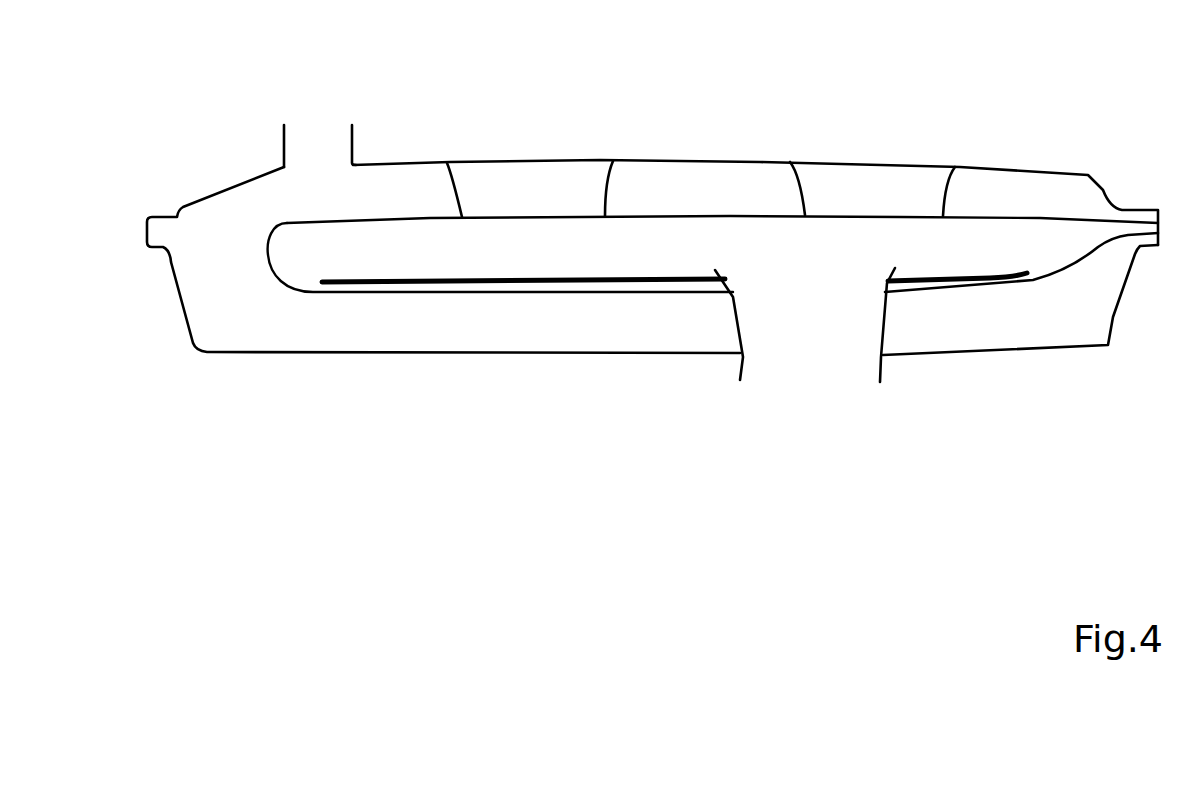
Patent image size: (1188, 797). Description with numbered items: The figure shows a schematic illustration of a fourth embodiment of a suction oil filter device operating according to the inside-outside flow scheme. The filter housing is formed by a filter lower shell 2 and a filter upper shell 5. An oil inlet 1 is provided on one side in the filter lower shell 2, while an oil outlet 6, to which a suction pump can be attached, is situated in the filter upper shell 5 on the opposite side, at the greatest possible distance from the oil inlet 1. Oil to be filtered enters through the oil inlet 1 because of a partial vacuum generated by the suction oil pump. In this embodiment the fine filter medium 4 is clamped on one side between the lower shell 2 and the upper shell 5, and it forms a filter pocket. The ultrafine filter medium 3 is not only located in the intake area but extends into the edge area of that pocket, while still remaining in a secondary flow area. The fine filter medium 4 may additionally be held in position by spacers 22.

The oil inlet 1 is at (882, 415).
The filter lower shell 2 is at (1033, 350).
The ultrafine filter medium 3 is at (660, 272).
The fine filter medium 4 is at (538, 293).
The filter upper shell 5 is at (1035, 165).
The oil outlet 6 is at (354, 138).
The spacers 22 is at (612, 183).